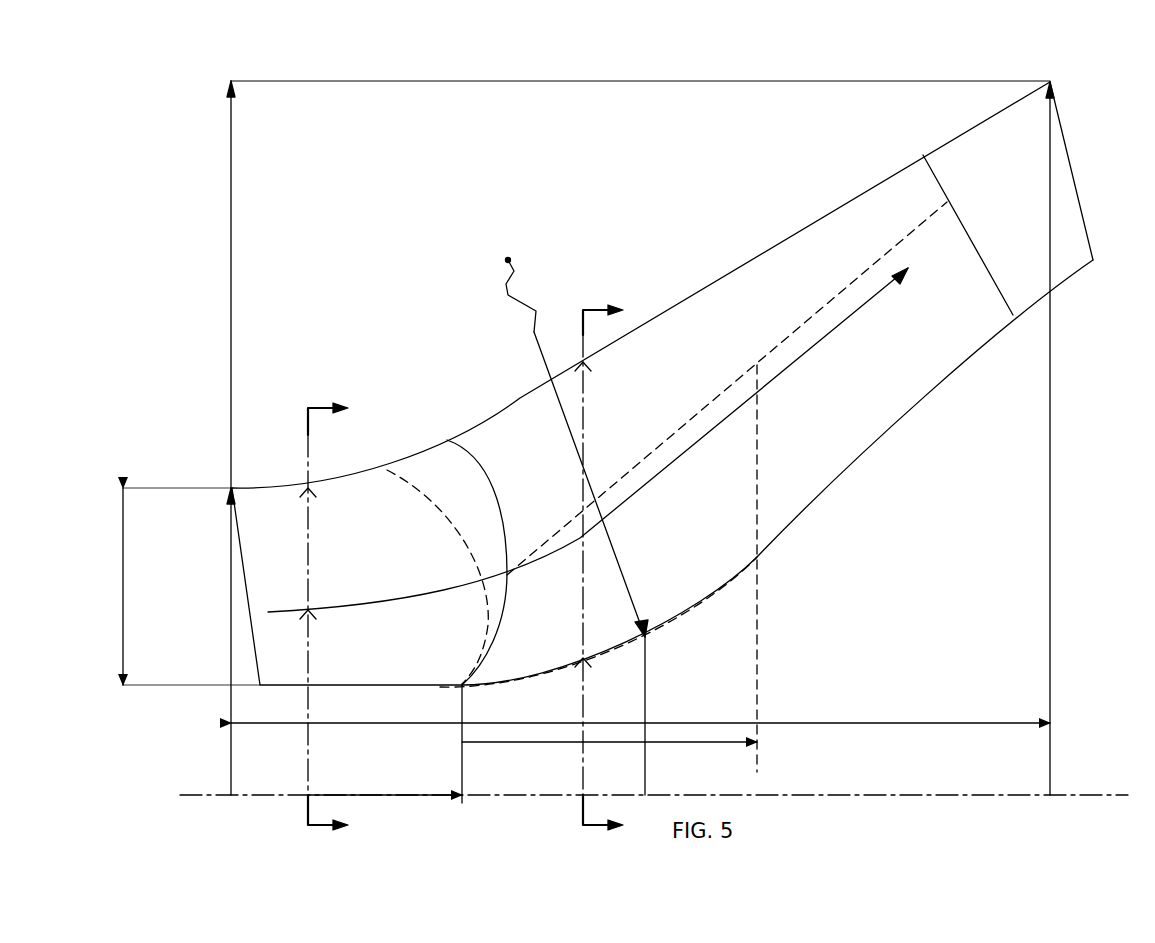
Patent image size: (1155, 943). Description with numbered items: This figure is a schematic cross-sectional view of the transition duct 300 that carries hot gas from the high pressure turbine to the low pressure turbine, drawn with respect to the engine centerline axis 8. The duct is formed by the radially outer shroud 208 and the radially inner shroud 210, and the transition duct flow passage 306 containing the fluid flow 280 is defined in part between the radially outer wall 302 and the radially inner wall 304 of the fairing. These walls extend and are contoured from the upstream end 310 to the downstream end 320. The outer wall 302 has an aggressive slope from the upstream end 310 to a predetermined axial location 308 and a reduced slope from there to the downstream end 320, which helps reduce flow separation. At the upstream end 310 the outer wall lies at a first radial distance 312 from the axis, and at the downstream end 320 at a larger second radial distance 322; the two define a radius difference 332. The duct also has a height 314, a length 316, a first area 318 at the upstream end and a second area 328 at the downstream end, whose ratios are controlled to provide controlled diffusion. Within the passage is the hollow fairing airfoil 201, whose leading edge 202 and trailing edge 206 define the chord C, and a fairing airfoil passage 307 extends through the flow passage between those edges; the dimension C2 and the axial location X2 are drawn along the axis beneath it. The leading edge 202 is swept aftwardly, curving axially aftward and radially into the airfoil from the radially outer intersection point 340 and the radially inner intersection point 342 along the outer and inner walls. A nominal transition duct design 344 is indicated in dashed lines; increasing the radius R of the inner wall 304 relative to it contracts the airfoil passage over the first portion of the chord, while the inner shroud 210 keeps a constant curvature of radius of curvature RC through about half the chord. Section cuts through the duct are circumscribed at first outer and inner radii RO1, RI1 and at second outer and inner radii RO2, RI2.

The centerline axis 8 is at (1087, 795).
The fairing airfoil 201 is at (507, 603).
The leading edge 202 is at (505, 530).
The trailing edge 206 is at (940, 185).
The radially outer shroud 208 is at (760, 256).
The radially inner shroud 210 is at (793, 523).
The fluid flow 280 is at (820, 340).
The transition duct 300 is at (404, 742).
The radially outer wall 302 is at (680, 304).
The radially inner wall 304 is at (683, 618).
The transition duct flow passage 306 is at (372, 571).
The fairing airfoil passage 307 is at (800, 435).
The predetermined axial location 308 is at (383, 468).
The upstream end 310 is at (234, 488).
The first radial distance 312 is at (231, 762).
The height 314 is at (123, 578).
The length 316 is at (713, 723).
The first area 318 is at (245, 590).
The downstream end 320 is at (1050, 82).
The second radial distance 322 is at (1050, 195).
The second area 328 is at (1068, 143).
The radius difference 332 is at (231, 375).
The radially outer intersection point 340 is at (447, 440).
The radially inner intersection point 342 is at (462, 688).
The nominal transition duct design 344 is at (668, 638).
The chord C is at (820, 310).
The chord dimension C2 is at (700, 742).
The radius R is at (645, 765).
The radius of curvature RC is at (514, 271).
The first outer radius RO1 is at (306, 500).
The second outer radius RO2 is at (586, 378).
The first inner radius RI1 is at (306, 693).
The second inner radius RI2 is at (586, 690).
The axial dimension X2 is at (393, 798).